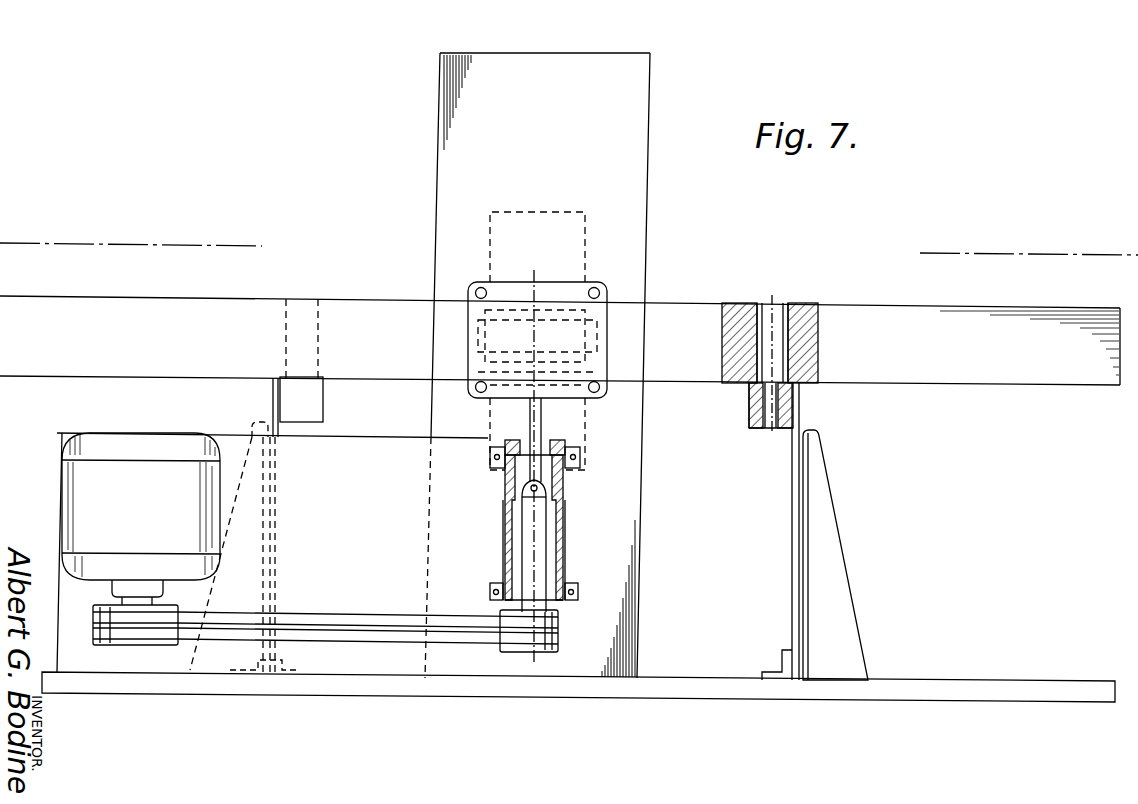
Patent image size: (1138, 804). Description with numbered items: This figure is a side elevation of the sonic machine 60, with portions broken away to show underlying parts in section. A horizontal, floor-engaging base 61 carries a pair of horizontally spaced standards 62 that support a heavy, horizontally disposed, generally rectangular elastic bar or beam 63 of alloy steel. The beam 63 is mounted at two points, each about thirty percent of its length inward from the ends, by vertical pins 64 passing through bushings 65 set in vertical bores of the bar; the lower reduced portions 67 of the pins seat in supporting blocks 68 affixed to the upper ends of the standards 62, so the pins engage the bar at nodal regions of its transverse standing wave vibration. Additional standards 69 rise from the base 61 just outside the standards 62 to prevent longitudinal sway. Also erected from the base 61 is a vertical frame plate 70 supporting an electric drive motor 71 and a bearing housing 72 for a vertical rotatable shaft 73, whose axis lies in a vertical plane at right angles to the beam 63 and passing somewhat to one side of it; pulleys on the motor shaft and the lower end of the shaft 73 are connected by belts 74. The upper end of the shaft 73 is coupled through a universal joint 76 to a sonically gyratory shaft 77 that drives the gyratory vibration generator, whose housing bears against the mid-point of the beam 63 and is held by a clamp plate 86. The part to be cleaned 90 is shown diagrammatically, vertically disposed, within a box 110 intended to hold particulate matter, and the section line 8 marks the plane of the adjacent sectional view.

The section line 8- 8 is at (1118, 262).
The sonic machine 60 is at (908, 391).
The floor-engaging base 61 is at (548, 690).
The standards 62 is at (278, 485).
The elastic bar or beam 63 is at (912, 308).
The vertical pins 64 is at (300, 302).
The bushings 65 is at (790, 300).
The lower reduced portions 67 is at (750, 395).
The supporting blocks 68 is at (752, 430).
The additional standards 69 is at (250, 558).
The vertical frame plate 70 is at (372, 437).
The electric drive motor 71 is at (150, 463).
The bearing housing 72 is at (503, 540).
The vertical rotatable shaft 73 is at (527, 572).
The belts 74 is at (320, 612).
The universal joint 76 is at (528, 485).
The sonically gyratory shaft 77 is at (543, 428).
The clamp plate 86 is at (607, 302).
The part to be cleaned 90 is at (555, 212).
The box 110 is at (648, 143).